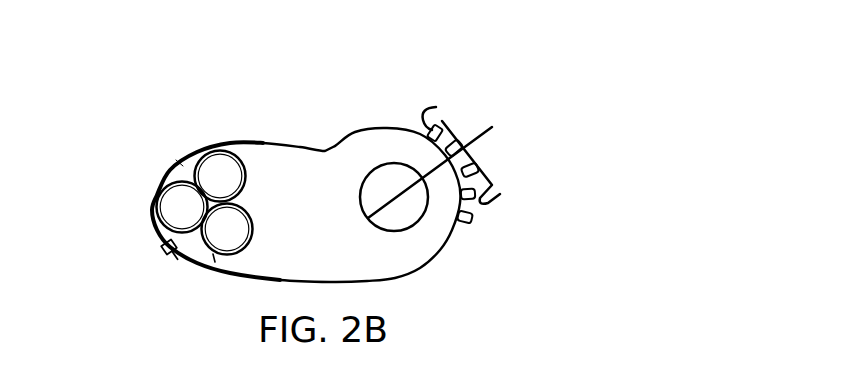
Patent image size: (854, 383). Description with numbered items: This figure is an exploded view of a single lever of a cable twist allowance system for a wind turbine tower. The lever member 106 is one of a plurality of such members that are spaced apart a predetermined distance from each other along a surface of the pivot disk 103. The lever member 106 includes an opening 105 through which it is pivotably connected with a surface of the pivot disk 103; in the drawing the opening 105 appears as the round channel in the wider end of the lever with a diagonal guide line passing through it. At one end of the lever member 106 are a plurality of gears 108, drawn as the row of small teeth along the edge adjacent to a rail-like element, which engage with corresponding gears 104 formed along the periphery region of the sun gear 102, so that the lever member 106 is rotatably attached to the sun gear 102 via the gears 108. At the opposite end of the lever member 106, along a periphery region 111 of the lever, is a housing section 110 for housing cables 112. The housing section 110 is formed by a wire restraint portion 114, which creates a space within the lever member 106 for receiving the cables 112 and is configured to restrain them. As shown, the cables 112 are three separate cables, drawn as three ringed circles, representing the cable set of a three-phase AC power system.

The sun gear 102 is at (565, 92).
The pivot disk 103 is at (383, 182).
The gears 104 is at (478, 167).
The opening 105 is at (415, 225).
The lever member 106 is at (282, 86).
The gears 108 is at (439, 133).
The housing section 110 is at (180, 163).
The periphery region 111 is at (201, 130).
The cables 112 is at (167, 202).
The wire restraint portion 114 is at (152, 226).